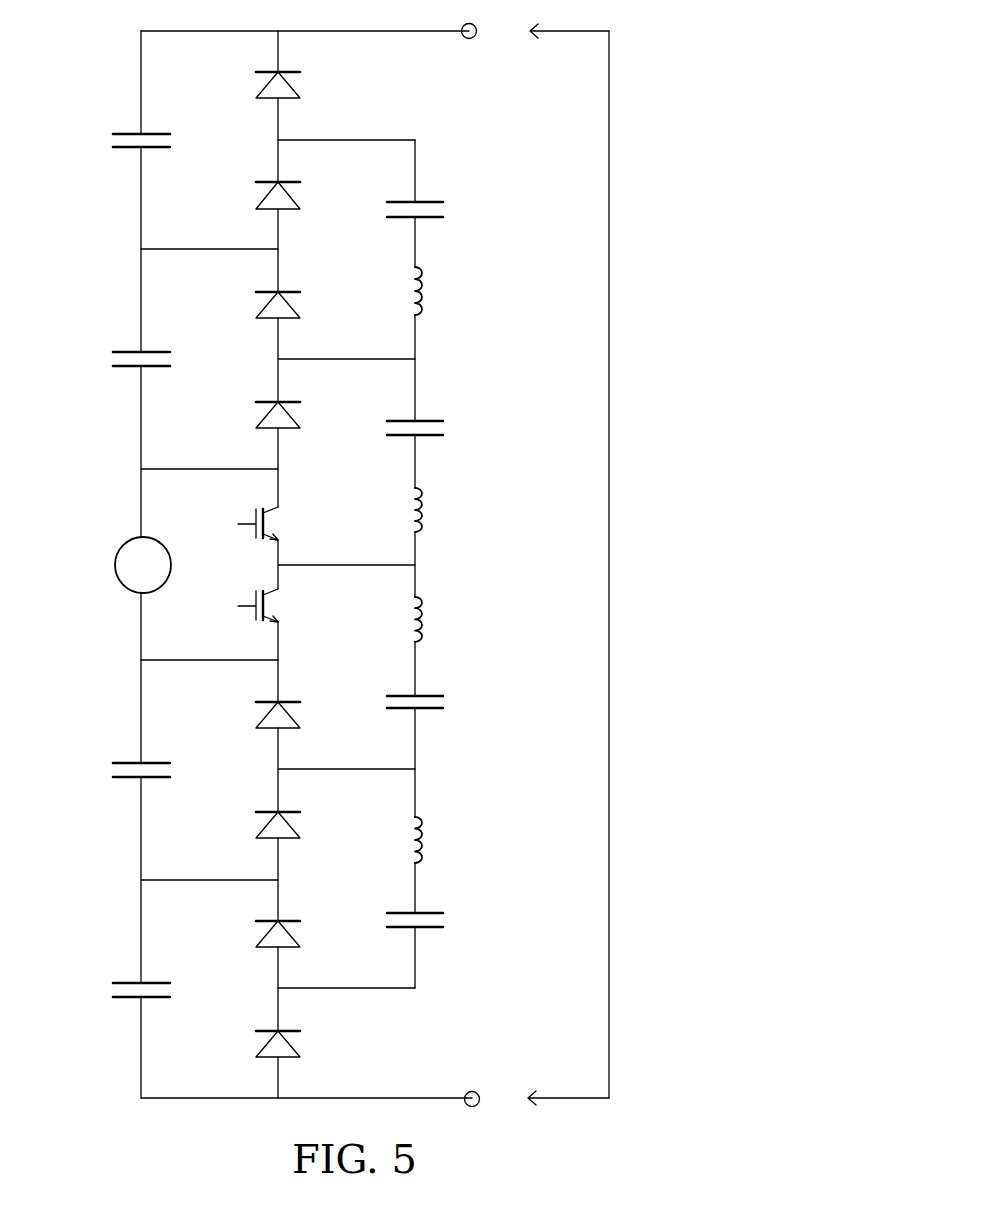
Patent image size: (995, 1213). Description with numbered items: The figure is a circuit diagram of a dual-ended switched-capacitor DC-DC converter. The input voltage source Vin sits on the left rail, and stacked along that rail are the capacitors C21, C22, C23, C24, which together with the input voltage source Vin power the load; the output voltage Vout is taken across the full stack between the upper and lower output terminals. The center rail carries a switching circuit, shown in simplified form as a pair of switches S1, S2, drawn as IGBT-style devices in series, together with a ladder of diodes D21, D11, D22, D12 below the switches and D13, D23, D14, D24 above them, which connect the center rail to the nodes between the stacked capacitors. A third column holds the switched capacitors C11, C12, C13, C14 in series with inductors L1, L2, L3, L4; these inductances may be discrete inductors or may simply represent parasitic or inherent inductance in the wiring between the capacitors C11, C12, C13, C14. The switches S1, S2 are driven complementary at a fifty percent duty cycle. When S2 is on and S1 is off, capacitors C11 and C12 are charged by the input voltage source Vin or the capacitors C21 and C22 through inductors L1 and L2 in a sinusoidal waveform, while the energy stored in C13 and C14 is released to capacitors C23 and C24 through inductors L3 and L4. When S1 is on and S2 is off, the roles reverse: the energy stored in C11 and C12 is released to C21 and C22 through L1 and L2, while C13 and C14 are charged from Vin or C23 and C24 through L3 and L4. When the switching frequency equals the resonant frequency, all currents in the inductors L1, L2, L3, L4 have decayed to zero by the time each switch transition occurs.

The capacitor C2_4 C24 is at (119, 140).
The capacitor C2_3 C23 is at (119, 359).
The capacitor C2_2 C22 is at (120, 771).
The capacitor C2_1 C21 is at (121, 989).
The capacitor C1_4 C14 is at (440, 212).
The capacitor C1_3 C13 is at (440, 431).
The capacitor C1_2 C12 is at (440, 703).
The capacitor C1_1 C11 is at (440, 922).
The diode D2 of stage 4 D24 is at (301, 86).
The diode D1 of stage 4 D14 is at (301, 196).
The diode D2 of stage 3 D23 is at (301, 306).
The diode D1 of stage 3 D13 is at (301, 416).
The diode D1 of stage 2 D12 is at (301, 716).
The diode D2 of stage 2 D22 is at (301, 826).
The diode D1 of stage 1 D11 is at (301, 935).
The diode D2 of stage 1 D21 is at (301, 1045).
The inductor L4 is at (444, 291).
The inductor L3 is at (444, 510).
The inductor L2 is at (444, 619).
The inductor L1 is at (444, 840).
The switch S2 is at (282, 523).
The switch S1 is at (282, 605).
The input voltage source Vin is at (143, 565).
The output voltage Vout is at (568, 564).